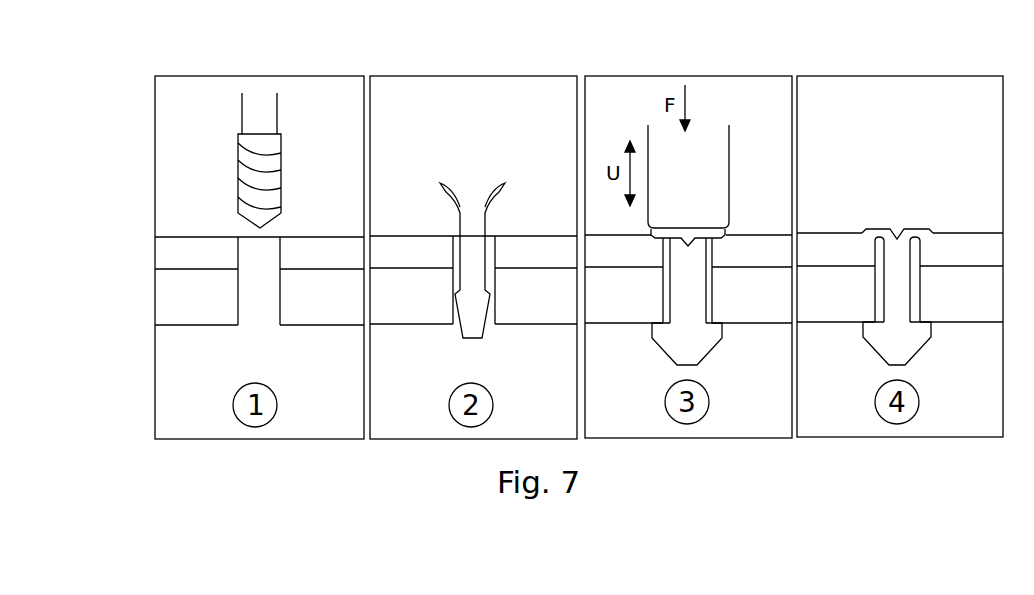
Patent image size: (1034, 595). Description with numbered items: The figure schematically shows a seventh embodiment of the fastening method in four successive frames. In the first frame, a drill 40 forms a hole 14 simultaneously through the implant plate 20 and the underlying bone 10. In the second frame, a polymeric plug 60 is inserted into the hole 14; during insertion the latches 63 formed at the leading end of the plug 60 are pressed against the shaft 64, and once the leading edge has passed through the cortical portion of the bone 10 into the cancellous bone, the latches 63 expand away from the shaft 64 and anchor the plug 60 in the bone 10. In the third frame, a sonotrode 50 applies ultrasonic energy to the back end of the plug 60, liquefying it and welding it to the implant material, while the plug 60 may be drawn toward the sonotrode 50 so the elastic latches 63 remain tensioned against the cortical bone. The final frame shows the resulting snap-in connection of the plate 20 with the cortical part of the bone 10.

The bone 10 is at (165, 306).
The hole 14 is at (257, 311).
The implant plate 20 is at (162, 258).
The drill 40 is at (258, 122).
The sonotrode 50 is at (653, 145).
The plug 60 is at (467, 230).
The latches 63 is at (715, 335).
The shaft 64 is at (683, 283).